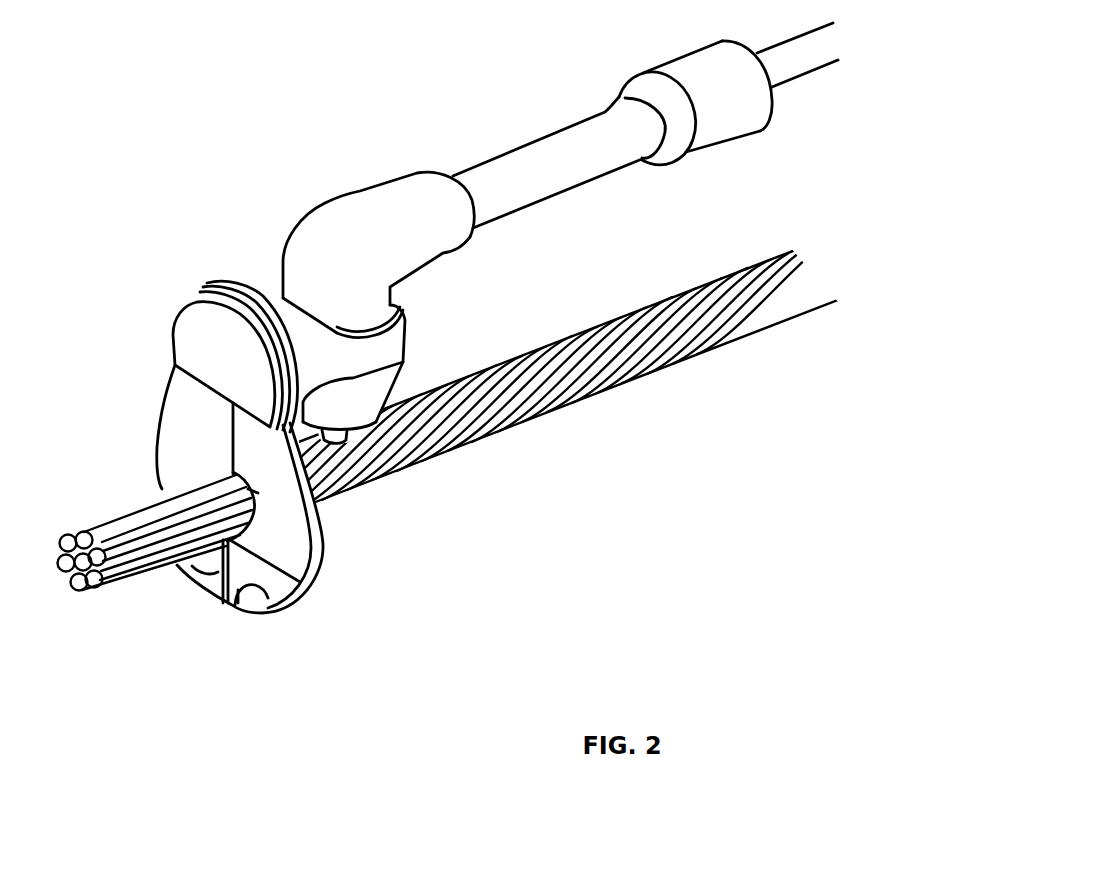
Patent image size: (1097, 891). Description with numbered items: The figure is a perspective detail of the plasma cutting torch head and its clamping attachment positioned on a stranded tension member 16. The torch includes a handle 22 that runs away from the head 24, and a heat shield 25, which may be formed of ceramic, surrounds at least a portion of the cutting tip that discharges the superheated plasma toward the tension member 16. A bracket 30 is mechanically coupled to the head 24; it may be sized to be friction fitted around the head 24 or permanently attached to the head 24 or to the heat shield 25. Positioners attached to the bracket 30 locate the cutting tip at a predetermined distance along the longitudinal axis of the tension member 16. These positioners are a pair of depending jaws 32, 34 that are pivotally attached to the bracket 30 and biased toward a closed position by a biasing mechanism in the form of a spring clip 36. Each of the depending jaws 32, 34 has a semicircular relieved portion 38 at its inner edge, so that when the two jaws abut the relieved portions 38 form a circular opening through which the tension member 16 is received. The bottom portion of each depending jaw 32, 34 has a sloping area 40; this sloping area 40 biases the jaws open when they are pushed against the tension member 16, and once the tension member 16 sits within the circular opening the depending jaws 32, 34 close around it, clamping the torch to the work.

The tension member 16 is at (547, 402).
The handle 22 is at (552, 138).
The head 24 is at (367, 215).
The heat shield 25 is at (365, 397).
The bracket 30 is at (408, 338).
The depending jaw 32 is at (317, 547).
The depending jaw 34 is at (172, 450).
The spring clip 36 is at (230, 283).
The semicircular relieved portion 38 is at (250, 495).
The sloping area 40 is at (203, 573).